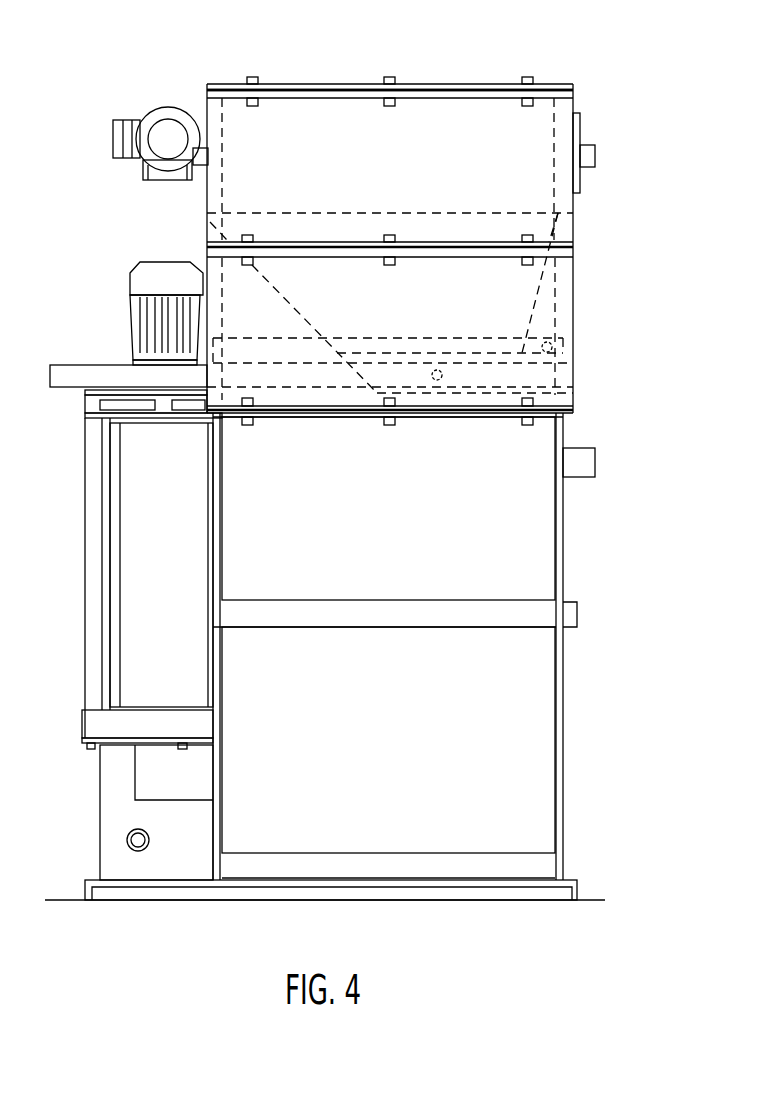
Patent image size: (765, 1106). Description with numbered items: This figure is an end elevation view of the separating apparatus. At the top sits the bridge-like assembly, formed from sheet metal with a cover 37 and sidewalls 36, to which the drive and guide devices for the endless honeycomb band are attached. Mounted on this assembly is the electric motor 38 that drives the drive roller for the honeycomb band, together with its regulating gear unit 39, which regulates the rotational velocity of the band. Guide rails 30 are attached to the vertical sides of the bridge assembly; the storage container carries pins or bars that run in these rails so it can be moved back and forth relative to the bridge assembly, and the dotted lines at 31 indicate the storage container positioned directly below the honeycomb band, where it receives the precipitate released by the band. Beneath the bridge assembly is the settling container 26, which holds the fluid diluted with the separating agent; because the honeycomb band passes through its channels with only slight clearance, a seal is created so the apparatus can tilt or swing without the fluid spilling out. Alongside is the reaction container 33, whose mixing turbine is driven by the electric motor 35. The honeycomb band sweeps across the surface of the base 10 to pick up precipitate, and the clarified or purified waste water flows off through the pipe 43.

The base 10 is at (348, 883).
The settling container 26 is at (389, 553).
The guide rails 30 is at (65, 385).
The storage container position below the honeycomb band 31 is at (287, 300).
The reaction container 33 is at (173, 583).
The electric motor 35 is at (137, 320).
The sidewalls 36 is at (412, 183).
The cover 37 is at (470, 98).
The electric motor 38 is at (158, 122).
The regulating gear unit 39 is at (128, 162).
The pipe 43 is at (583, 468).